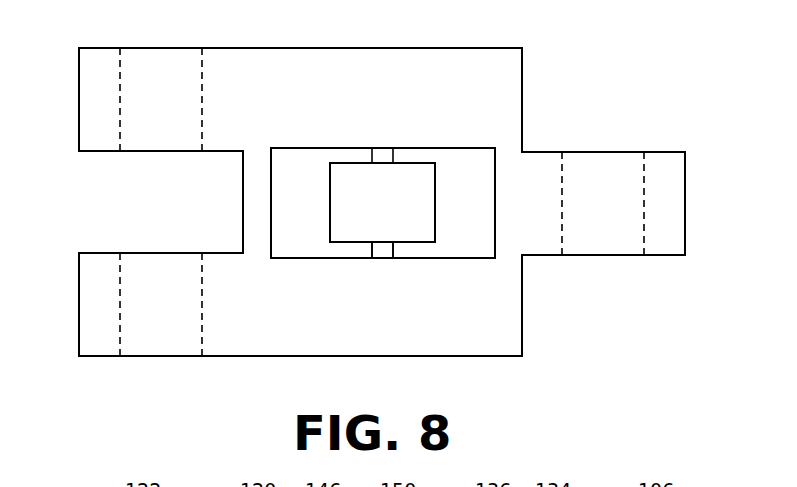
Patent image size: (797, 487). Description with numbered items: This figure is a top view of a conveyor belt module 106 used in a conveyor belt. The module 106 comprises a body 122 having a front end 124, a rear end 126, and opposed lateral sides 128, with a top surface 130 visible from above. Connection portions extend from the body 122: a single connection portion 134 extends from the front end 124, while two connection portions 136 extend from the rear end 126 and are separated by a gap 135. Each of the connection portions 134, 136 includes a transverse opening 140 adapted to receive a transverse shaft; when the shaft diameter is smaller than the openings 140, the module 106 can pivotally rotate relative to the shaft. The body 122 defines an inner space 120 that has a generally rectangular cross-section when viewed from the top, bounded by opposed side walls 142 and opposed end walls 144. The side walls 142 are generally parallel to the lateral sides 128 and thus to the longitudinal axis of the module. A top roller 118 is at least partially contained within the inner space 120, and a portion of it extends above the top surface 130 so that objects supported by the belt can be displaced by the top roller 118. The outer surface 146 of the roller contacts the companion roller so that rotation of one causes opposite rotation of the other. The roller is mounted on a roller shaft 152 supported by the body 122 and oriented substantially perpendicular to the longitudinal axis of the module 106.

The conveyor belt module 106 is at (663, 70).
The top roller 118 is at (360, 230).
The inner space 120 is at (292, 175).
The body 122 is at (467, 69).
The front end 124 is at (532, 307).
The rear end 126 is at (227, 205).
The lateral sides 128 is at (252, 47).
The top surface 130 is at (399, 106).
The connection portion 134 is at (664, 177).
The gap 135 is at (120, 195).
The connection portions 136 is at (82, 67).
The transverse opening 140 is at (198, 76).
The side walls 142 is at (493, 173).
The end walls 144 is at (333, 148).
The outer surface 146 is at (399, 214).
The roller shaft 152 is at (380, 252).